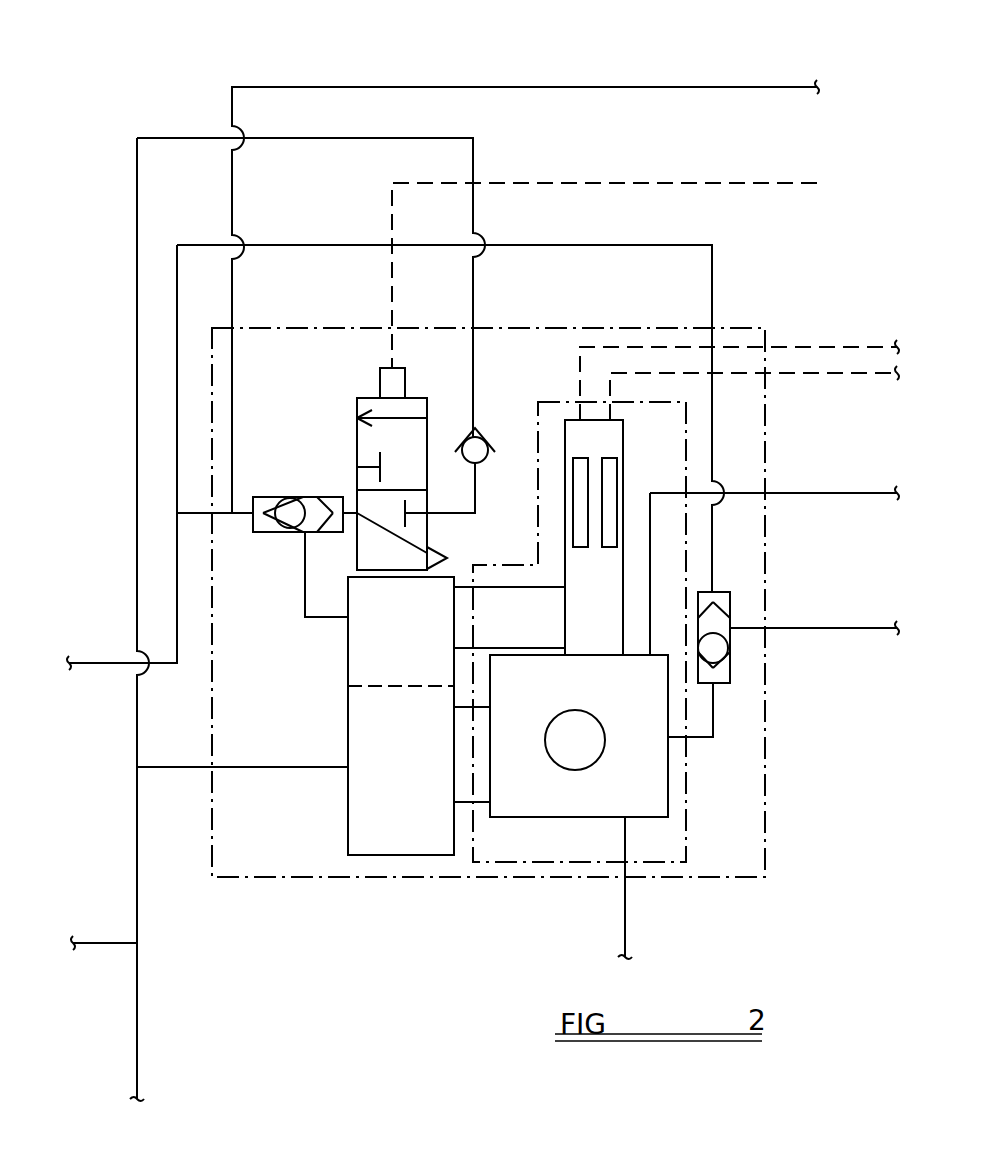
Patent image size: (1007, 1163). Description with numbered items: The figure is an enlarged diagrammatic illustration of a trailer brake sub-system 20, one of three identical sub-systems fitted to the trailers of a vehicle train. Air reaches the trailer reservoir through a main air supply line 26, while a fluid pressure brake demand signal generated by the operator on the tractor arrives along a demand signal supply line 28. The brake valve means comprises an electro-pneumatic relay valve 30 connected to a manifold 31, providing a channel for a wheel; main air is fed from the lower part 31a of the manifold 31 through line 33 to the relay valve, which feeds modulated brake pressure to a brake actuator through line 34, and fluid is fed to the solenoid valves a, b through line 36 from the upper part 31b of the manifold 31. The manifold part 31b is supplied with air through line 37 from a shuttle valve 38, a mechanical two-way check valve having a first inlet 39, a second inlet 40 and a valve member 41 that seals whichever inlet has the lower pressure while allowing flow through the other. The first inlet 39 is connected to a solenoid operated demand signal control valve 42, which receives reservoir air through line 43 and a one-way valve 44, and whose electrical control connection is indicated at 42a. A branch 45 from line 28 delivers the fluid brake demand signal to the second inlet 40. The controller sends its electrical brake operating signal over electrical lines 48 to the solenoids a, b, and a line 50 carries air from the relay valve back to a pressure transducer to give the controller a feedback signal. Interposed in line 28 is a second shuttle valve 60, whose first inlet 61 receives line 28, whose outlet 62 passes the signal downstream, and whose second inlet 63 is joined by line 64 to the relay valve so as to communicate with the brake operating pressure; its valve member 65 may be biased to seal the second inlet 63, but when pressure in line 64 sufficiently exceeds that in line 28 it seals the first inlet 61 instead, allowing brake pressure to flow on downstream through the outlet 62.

The brake sub-system 20 is at (765, 877).
The main air supply line 26 is at (102, 950).
The demand signal supply line 28 is at (713, 452).
The electro-pneumatic relay valve 30 is at (688, 793).
The manifold 31 is at (348, 800).
The lower part of the manifold 31a is at (393, 855).
The upper part of the manifold 31b is at (448, 578).
The line 33 is at (470, 803).
The line 34 is at (625, 915).
The line 36 is at (525, 587).
The line 37 is at (303, 600).
The shuttle valve 38 is at (288, 495).
The first inlet 39 is at (330, 497).
The second inlet 40 is at (270, 535).
The valve member 41 is at (295, 510).
The demand signal control valve 42 is at (370, 397).
The solenoid control line 42a is at (590, 183).
The line 43 is at (473, 165).
The one-way valve 44 is at (480, 455).
The branch 45 is at (322, 86).
The electrical lines 48 is at (580, 365).
The line 50 is at (815, 493).
The second shuttle valve 60 is at (758, 652).
The first inlet 61 is at (713, 593).
The outlet 62 is at (730, 630).
The second inlet 63 is at (718, 683).
The line 64 is at (707, 737).
The valve member 65 is at (730, 655).